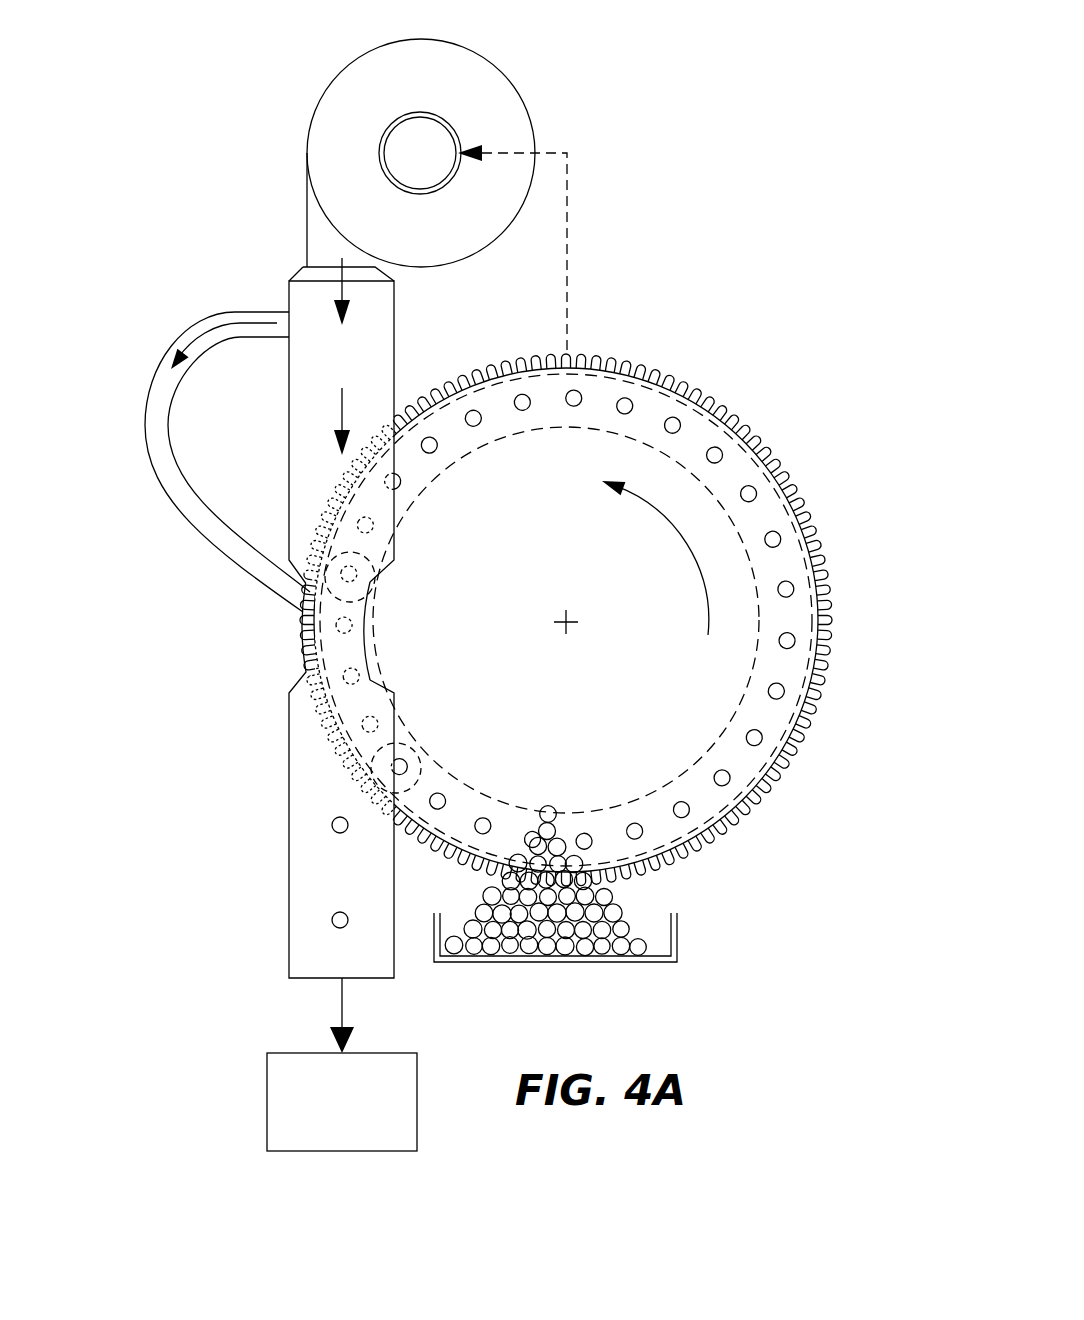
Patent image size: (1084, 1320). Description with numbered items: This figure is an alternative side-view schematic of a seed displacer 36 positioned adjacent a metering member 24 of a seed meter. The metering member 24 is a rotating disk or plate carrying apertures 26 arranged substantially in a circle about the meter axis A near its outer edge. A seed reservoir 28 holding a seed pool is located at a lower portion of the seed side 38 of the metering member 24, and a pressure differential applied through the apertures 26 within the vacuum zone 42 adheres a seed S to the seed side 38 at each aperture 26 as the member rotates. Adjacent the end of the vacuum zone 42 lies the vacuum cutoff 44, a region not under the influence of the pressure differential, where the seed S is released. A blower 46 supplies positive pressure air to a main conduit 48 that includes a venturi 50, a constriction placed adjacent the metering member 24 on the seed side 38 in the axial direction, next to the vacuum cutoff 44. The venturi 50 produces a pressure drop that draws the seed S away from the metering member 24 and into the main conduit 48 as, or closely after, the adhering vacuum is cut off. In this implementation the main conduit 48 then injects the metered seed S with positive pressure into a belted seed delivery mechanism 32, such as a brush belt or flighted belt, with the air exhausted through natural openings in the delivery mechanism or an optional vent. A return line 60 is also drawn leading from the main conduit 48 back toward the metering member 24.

The metering member 24 is at (758, 440).
The apertures 26 is at (788, 578).
The seed reservoir 28 is at (595, 963).
The seed delivery mechanism 32 is at (325, 1152).
The seed displacer 36 is at (226, 210).
The seed side 38 is at (486, 538).
The vacuum zone 42 is at (658, 375).
The vacuum cutoff 44 is at (335, 603).
The blower 46 is at (510, 84).
The main conduit 48 is at (395, 360).
The venturi 50 is at (368, 667).
The return tube 60 is at (152, 370).
The seed S is at (637, 930).
The meter axis A is at (574, 649).